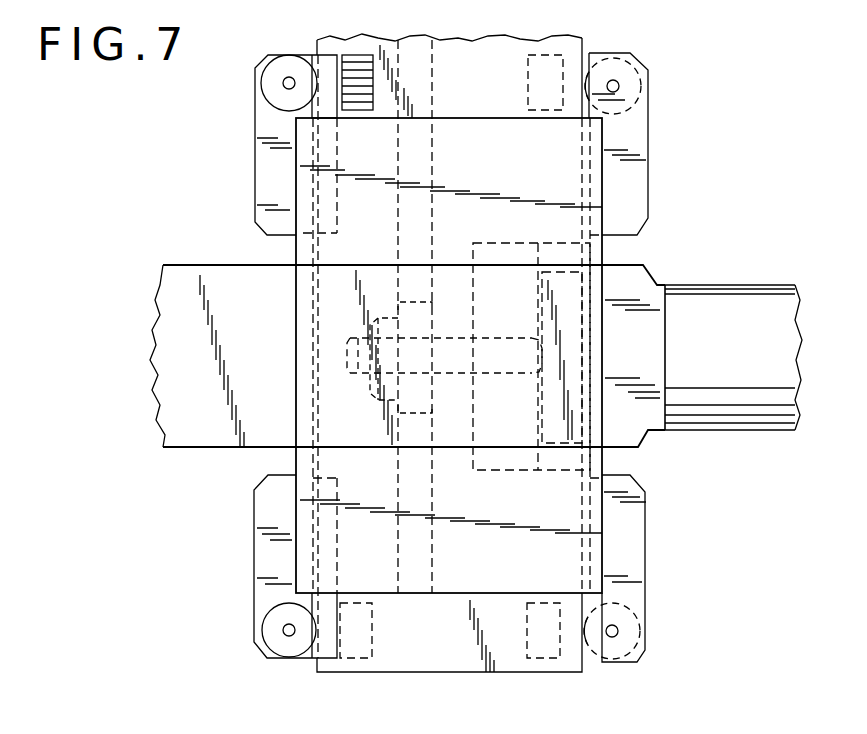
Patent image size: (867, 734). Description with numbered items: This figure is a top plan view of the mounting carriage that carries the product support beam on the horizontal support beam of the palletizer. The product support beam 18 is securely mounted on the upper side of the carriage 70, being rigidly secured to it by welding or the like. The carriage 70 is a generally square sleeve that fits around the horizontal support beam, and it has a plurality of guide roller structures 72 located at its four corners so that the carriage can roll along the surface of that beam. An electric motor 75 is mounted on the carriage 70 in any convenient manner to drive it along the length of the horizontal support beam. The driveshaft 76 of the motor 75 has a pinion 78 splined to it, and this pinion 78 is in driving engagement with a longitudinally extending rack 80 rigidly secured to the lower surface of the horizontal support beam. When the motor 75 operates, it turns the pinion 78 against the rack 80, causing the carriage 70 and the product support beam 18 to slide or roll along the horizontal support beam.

The product support beam 18 is at (162, 290).
The carriage 70 is at (602, 468).
The guide roller structures 72 is at (254, 68).
The electric motor 75 is at (711, 418).
The driveshaft 76 is at (455, 338).
The pinion 78 is at (398, 422).
The rack 80 is at (435, 188).